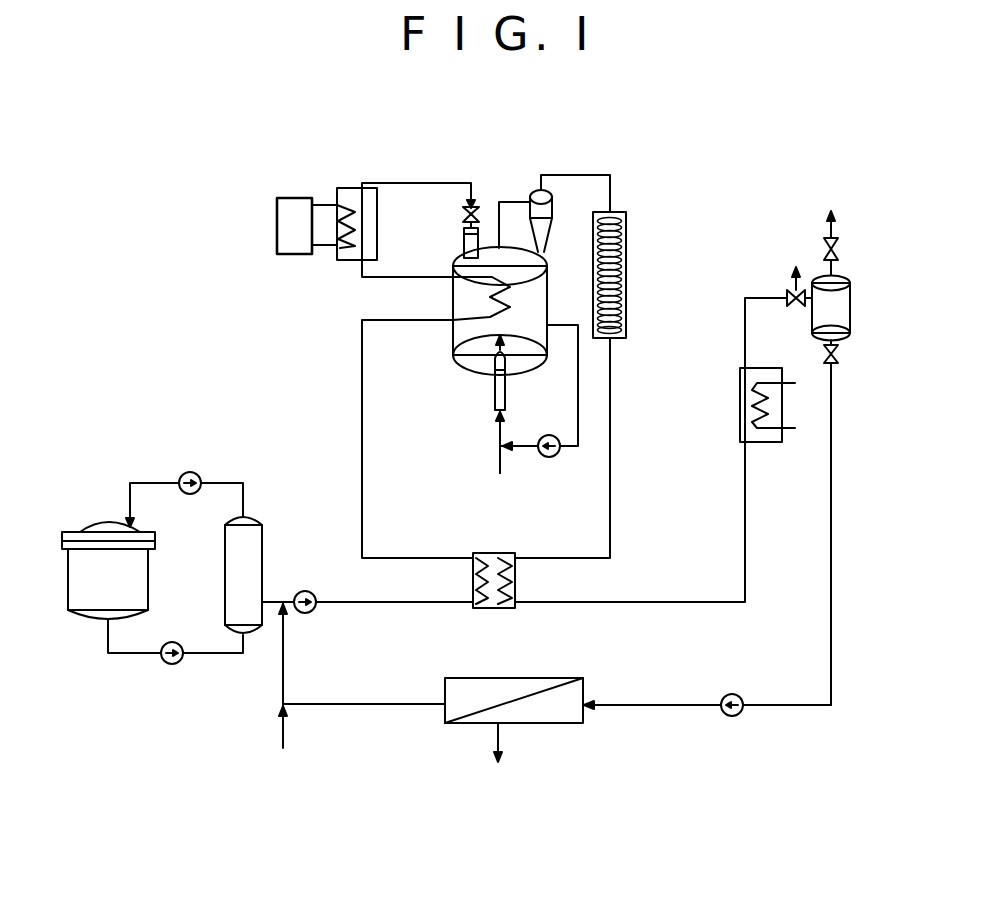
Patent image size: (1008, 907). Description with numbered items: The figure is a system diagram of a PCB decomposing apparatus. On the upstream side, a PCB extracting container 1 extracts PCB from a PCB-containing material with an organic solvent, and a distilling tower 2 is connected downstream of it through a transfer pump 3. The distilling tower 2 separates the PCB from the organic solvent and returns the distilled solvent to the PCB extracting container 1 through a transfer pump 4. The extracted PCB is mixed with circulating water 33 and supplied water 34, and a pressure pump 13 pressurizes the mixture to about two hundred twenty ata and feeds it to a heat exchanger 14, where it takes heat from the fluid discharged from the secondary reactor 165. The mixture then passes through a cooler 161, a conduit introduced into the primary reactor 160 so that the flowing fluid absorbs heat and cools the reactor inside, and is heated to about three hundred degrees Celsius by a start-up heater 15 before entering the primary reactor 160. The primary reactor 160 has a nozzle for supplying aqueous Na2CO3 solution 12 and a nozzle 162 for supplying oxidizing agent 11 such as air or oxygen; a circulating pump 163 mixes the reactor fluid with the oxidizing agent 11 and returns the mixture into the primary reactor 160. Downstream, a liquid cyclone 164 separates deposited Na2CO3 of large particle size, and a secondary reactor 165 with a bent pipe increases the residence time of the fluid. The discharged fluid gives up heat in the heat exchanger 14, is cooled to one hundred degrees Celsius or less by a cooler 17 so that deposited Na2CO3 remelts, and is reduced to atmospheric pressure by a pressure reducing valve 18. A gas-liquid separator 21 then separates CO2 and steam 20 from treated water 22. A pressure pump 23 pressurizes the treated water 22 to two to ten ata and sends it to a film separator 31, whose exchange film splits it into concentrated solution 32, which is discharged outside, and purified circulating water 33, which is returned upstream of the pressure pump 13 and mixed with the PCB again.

The PCB extracting container 1 is at (85, 525).
The distilling tower 2 is at (250, 516).
The transfer pump 3 is at (161, 659).
The transfer pump 4 is at (190, 471).
The oxidizing agent 11 is at (497, 447).
The aqueous Na2CO3 solution 12 is at (467, 367).
The pressure pump 13 is at (305, 614).
The heat exchanger 14 is at (480, 610).
The start-up heater 15 is at (277, 230).
The cooler 17 is at (784, 402).
The pressure reducing valve 18 is at (786, 290).
The steam 20 is at (834, 236).
The gas-liquid separator 21 is at (851, 305).
The treated water 22 is at (832, 612).
The pressure pump 23 is at (734, 717).
The film separator 31 is at (586, 692).
The concentrated solution 32 is at (500, 735).
The circulating water 33 is at (318, 706).
The water 34 is at (283, 732).
The primary reactor 160 is at (456, 262).
The cooler 161 is at (458, 318).
The nozzle 162 is at (506, 400).
The circulating pump 163 is at (560, 452).
The liquid cyclone 164 is at (532, 186).
The secondary reactor 165 is at (627, 252).